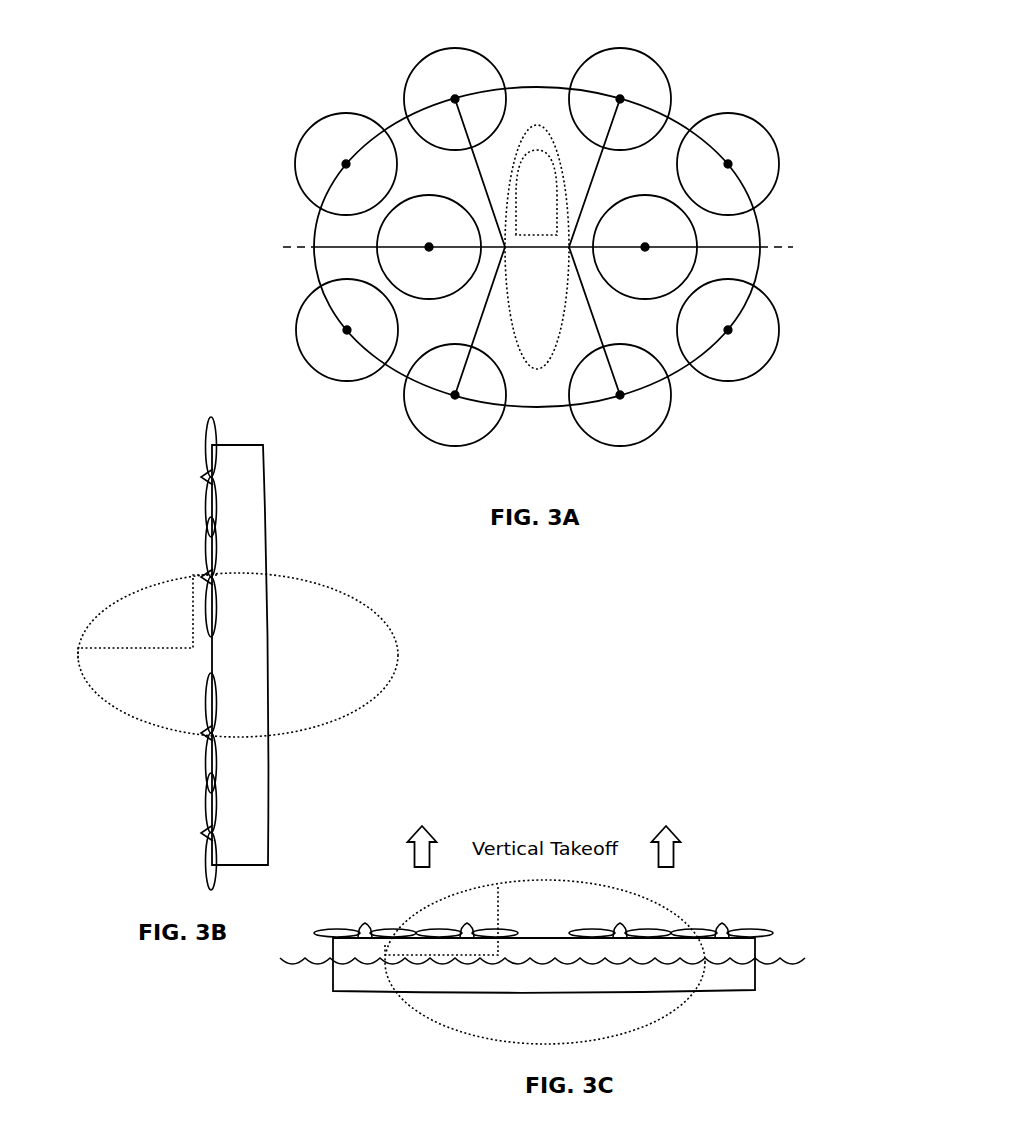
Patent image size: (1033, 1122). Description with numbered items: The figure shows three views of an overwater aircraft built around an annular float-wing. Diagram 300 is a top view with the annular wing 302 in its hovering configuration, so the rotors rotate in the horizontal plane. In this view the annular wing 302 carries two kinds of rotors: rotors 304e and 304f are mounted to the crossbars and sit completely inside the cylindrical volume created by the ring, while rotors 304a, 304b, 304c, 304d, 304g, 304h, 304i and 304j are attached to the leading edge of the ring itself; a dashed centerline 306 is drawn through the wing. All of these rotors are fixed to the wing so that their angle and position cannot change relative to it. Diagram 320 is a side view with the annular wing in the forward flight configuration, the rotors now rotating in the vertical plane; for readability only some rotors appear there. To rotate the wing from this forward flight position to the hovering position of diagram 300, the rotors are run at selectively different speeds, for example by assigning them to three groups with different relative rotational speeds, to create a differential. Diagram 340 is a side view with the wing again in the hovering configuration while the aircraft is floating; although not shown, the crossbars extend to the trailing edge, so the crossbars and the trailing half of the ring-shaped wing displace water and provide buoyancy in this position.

In FIG. 3A, the diagram 300 is at (270, 72).
In FIG. 3A, the annular wing 302 is at (545, 88).
In FIG. 3A, the rotor 304a is at (455, 48).
In FIG. 3B, the rotor 304a is at (205, 833).
In FIG. 3C, the rotor 304a is at (373, 910).
In FIG. 3A, the rotor 304b is at (620, 48).
In FIG. 3A, the rotor 304c is at (348, 113).
In FIG. 3B, the rotor 304c is at (205, 733).
In FIG. 3C, the rotor 304c is at (485, 910).
In FIG. 3A, the rotor 304d is at (728, 113).
In FIG. 3A, the rotor 304e is at (438, 184).
In FIG. 3A, the rotor 304f is at (645, 195).
In FIG. 3A, the rotor 304g is at (296, 332).
In FIG. 3B, the rotor 304g is at (205, 577).
In FIG. 3C, the rotor 304g is at (628, 910).
In FIG. 3A, the rotor 304h is at (679, 333).
In FIG. 3A, the rotor 304i is at (455, 446).
In FIG. 3B, the rotor 304i is at (205, 477).
In FIG. 3C, the rotor 304i is at (723, 923).
In FIG. 3A, the rotor 304j is at (620, 446).
In FIG. 3A, the lateral axis 306 is at (298, 245).
In FIG. 3B, the diagram 320 is at (120, 416).
In FIG. 3C, the diagram 340 is at (706, 798).